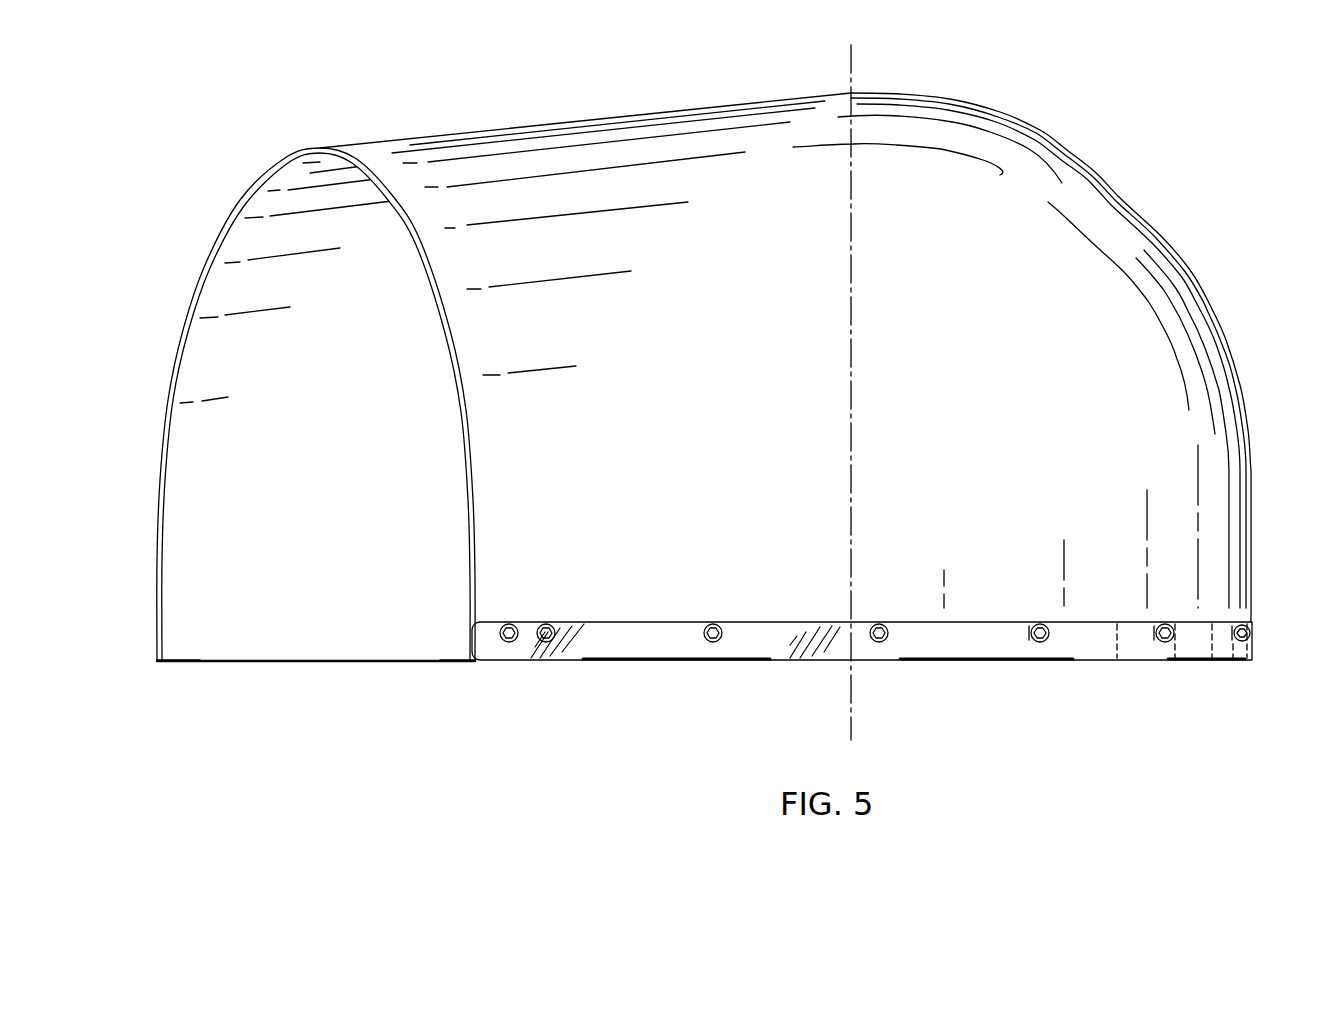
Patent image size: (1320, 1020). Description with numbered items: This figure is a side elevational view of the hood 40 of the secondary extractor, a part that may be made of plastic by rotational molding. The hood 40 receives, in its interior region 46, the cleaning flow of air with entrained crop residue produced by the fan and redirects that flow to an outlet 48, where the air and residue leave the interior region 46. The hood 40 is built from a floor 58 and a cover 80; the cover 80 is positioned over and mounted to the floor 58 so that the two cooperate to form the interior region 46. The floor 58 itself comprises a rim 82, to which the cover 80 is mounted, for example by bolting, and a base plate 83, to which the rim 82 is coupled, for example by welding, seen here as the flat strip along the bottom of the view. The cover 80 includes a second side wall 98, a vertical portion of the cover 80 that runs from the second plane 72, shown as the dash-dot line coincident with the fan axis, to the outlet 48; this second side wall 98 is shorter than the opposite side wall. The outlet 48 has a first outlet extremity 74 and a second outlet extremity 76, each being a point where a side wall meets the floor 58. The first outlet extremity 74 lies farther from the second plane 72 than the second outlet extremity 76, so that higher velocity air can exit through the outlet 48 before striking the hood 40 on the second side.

The hood 40 is at (1181, 224).
The interior region 46 is at (256, 236).
The outlet 48 is at (442, 310).
The floor 58 is at (312, 670).
The second plane 72 is at (896, 392).
The first outlet extremity 74 is at (160, 660).
The second outlet extremity 76 is at (472, 658).
The cover 80 is at (1087, 323).
The rim 82 is at (930, 652).
The base plate 83 is at (352, 663).
The second side wall 98 is at (548, 615).